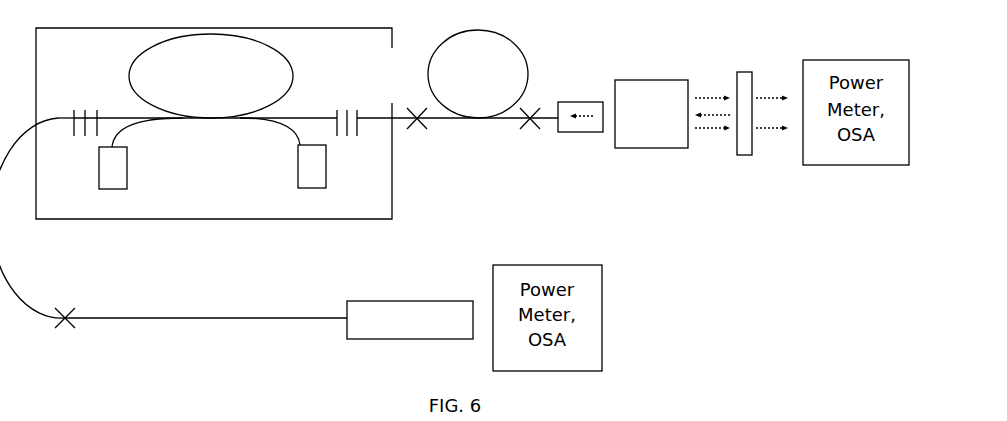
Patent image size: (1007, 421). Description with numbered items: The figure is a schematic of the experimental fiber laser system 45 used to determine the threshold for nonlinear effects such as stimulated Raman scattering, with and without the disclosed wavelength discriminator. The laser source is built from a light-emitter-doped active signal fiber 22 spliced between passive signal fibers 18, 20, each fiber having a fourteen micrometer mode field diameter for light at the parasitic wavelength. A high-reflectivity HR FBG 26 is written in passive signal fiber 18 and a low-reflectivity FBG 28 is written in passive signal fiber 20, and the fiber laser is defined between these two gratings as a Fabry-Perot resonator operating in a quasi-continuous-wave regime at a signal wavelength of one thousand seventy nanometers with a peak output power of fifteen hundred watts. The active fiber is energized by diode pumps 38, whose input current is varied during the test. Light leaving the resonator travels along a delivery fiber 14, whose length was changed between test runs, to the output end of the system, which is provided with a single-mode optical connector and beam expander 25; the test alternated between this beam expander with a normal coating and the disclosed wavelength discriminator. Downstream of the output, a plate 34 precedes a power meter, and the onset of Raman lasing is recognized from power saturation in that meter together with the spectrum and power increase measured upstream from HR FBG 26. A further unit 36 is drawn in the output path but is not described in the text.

The delivery fiber 14 is at (491, 74).
The passive signal fiber 18 is at (76, 105).
The passive signal fiber 20 is at (359, 105).
The active signal fiber 22 is at (194, 81).
The SM optical connector/beam expander 25 is at (580, 98).
The HR FBG 26 is at (63, 142).
The low reflectivity FBG 28 is at (365, 142).
The plate 34 is at (758, 62).
The pump laser 36 is at (634, 125).
The diode pumps 38 is at (132, 168).
The system 45 is at (575, 177).